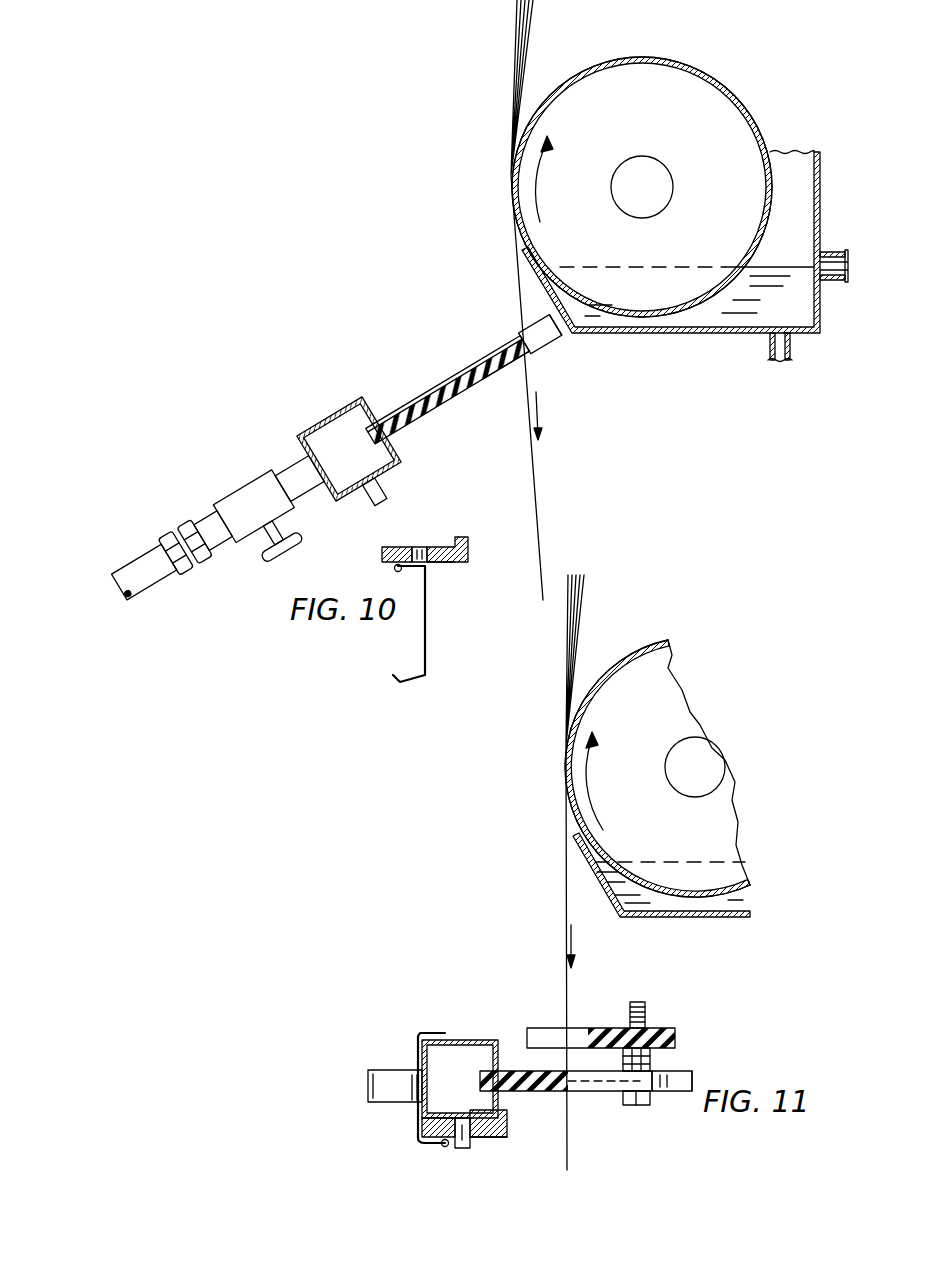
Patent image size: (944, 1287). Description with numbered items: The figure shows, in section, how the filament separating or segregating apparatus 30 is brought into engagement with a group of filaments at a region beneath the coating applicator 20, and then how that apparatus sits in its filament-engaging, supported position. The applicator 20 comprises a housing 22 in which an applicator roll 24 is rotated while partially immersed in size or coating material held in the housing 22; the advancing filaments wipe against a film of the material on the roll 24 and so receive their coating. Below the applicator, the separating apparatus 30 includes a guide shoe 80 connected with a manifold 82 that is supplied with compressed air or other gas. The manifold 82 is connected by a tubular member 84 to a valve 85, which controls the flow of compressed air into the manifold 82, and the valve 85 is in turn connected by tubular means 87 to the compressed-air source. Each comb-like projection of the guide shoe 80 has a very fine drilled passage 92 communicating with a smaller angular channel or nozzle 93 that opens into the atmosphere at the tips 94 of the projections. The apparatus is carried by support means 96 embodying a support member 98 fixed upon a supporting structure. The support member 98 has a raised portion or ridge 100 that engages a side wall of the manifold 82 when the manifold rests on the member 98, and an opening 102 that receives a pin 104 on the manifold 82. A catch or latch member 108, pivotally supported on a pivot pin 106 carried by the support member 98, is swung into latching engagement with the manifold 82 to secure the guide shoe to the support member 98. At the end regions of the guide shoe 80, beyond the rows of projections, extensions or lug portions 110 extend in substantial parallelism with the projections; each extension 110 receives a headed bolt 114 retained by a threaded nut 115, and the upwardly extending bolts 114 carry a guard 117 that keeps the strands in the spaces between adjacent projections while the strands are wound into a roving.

In FIG. 10, the applicator 20 is at (748, 104).
In FIG. 11, the applicator 20 is at (638, 640).
In FIG. 10, the housing 22 is at (678, 335).
In FIG. 11, the housing 22 is at (712, 917).
In FIG. 10, the applicator roll 24 is at (640, 57).
In FIG. 11, the applicator roll 24 is at (620, 665).
In FIG. 10, the filament separating apparatus 30 is at (344, 466).
In FIG. 11, the filament separating apparatus 30 is at (557, 1061).
In FIG. 10, the guide shoe 80 is at (448, 390).
In FIG. 11, the guide shoe 80 is at (522, 1091).
In FIG. 10, the manifold 82 is at (349, 449).
In FIG. 11, the manifold 82 is at (462, 1040).
In FIG. 10, the tubular member 84 is at (299, 479).
In FIG. 11, the tubular member 84 is at (393, 1048).
In FIG. 10, the valve 85 is at (262, 520).
In FIG. 10, the tubular means 87 is at (171, 555).
In FIG. 10, the drilled passage 92 is at (445, 385).
In FIG. 10, the angular channel 93 is at (505, 365).
In FIG. 10, the tips 94 is at (540, 334).
In FIG. 11, the tips 94 is at (655, 1085).
In FIG. 10, the support means 96 is at (434, 568).
In FIG. 11, the support means 96 is at (474, 1136).
In FIG. 10, the support member 98 is at (410, 530).
In FIG. 11, the support member 98 is at (507, 1128).
In FIG. 10, the raised portion 100 is at (462, 537).
In FIG. 10, the opening 102 is at (422, 547).
In FIG. 10, the pin 104 is at (375, 492).
In FIG. 11, the pin 104 is at (462, 1125).
In FIG. 10, the pivot pin 106 is at (394, 569).
In FIG. 11, the pivot pin 106 is at (440, 1144).
In FIG. 10, the latch member 108 is at (426, 645).
In FIG. 11, the latch member 108 is at (418, 1040).
In FIG. 10, the extensions 110 is at (555, 325).
In FIG. 11, the extensions 110 is at (692, 1082).
In FIG. 11, the headed bolt 114 is at (658, 975).
In FIG. 11, the threaded nut 115 is at (650, 1058).
In FIG. 11, the guard 117 is at (660, 1030).